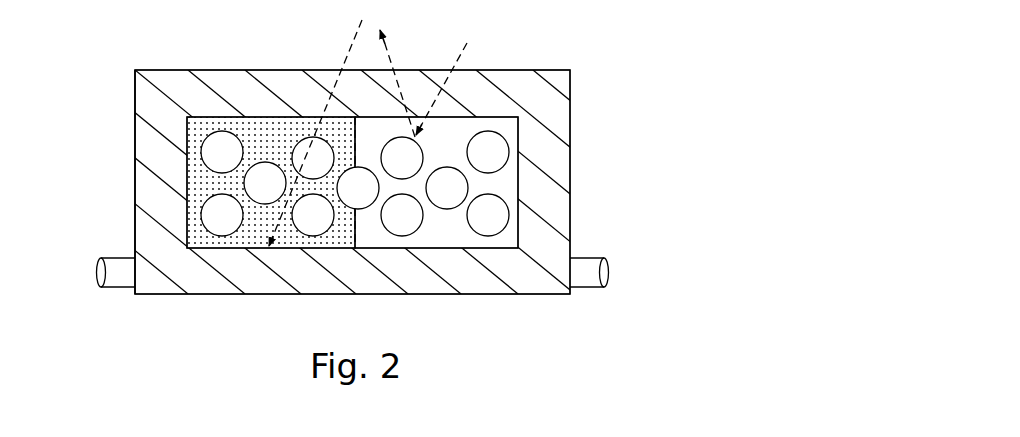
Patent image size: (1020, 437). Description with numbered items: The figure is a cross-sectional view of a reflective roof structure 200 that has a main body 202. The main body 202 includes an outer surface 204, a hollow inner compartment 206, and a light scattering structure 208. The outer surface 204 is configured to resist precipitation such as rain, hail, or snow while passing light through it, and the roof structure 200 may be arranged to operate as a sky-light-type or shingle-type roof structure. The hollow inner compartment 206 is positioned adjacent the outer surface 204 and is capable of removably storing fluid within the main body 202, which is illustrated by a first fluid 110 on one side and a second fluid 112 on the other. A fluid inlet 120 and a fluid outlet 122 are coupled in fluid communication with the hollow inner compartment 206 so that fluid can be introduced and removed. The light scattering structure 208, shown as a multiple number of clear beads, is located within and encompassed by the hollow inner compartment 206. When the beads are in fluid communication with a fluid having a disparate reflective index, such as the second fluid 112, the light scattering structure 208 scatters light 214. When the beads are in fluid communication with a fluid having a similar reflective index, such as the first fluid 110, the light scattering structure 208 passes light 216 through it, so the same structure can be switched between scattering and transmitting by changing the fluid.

The roof structure 200 is at (589, 49).
The main body 202 is at (126, 103).
The outer surface 204 is at (175, 70).
The hollow inner compartment 206 is at (512, 185).
The light scattering structure 208 is at (237, 138).
The first fluid 110 is at (345, 235).
The second fluid 112 is at (432, 230).
The fluid inlet 120 is at (119, 289).
The fluid outlet 122 is at (590, 291).
The light 214 is at (385, 50).
The light 216 is at (347, 47).